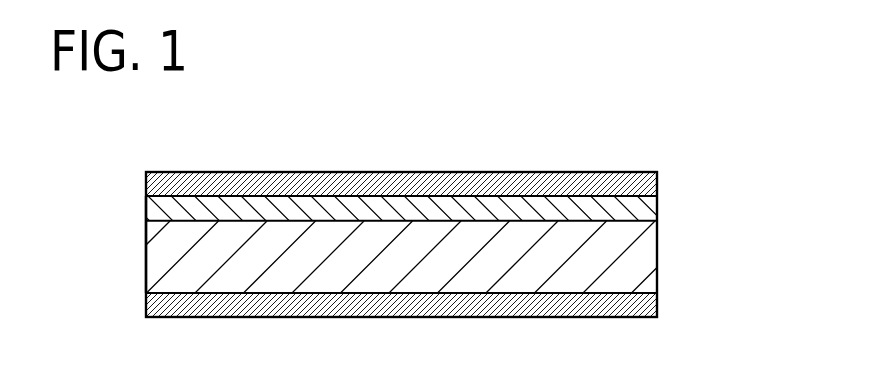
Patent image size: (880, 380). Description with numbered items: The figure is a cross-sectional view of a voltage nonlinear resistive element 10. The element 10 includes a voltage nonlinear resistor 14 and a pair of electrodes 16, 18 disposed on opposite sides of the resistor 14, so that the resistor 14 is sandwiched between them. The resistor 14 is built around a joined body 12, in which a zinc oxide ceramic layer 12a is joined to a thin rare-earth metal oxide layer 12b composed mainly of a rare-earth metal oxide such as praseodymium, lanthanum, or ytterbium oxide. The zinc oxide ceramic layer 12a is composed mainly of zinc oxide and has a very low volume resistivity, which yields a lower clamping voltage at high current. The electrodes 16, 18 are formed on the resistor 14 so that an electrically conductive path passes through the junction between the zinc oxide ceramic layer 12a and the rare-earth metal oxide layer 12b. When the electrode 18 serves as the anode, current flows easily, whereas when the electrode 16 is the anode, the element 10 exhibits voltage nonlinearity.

The voltage nonlinear resistive element 10 is at (643, 139).
The joined body 12 is at (461, 244).
The zinc oxide ceramic layer 12a is at (428, 257).
The rare-earth metal oxide layer 12b is at (643, 210).
The voltage nonlinear resistor 14 is at (135, 195).
The electrode 16 is at (643, 307).
The electrode 18 is at (643, 183).